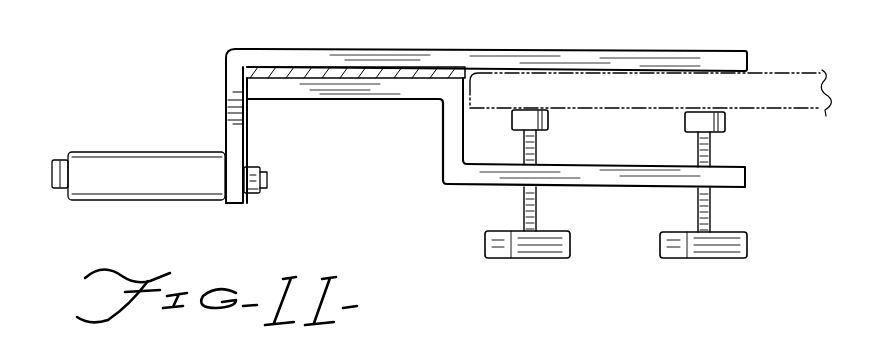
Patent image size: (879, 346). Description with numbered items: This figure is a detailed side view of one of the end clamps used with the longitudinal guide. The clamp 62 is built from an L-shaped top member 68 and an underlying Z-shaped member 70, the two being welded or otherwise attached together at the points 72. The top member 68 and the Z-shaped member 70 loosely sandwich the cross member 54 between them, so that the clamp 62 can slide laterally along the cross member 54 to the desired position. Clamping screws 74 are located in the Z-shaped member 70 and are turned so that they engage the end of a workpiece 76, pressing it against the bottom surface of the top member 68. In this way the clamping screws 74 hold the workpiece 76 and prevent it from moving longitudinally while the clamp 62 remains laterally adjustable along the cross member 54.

The cross member 54 is at (300, 75).
The clamp 62 is at (404, 160).
The top member 68 is at (537, 27).
The Z shaped member 70 is at (465, 190).
The points 72 is at (247, 101).
The clamping screws 74 is at (700, 207).
The workpiece 76 is at (644, 108).